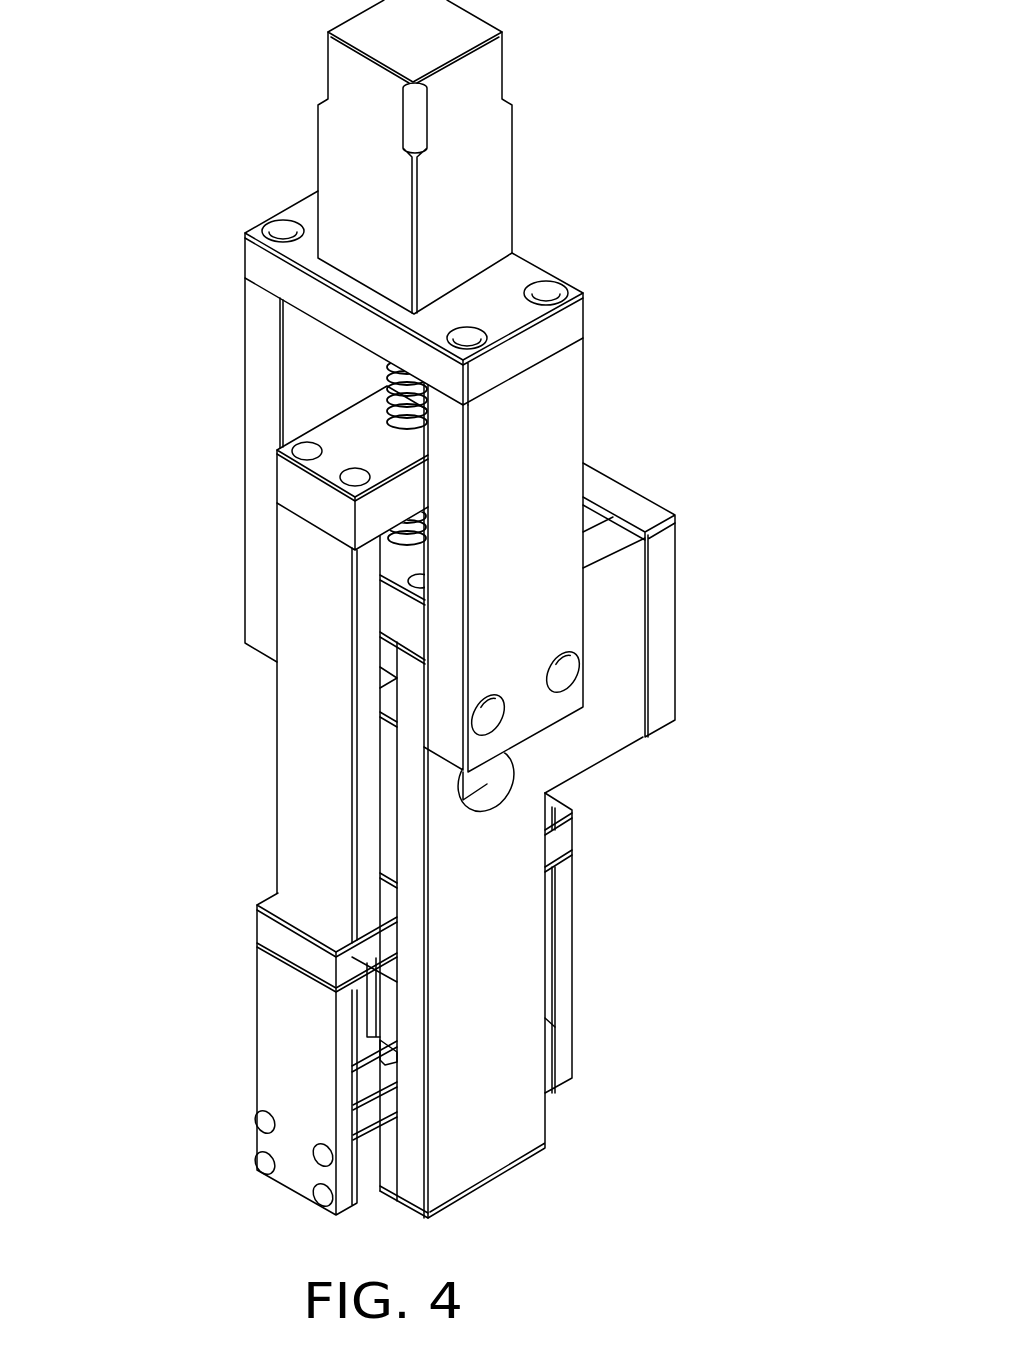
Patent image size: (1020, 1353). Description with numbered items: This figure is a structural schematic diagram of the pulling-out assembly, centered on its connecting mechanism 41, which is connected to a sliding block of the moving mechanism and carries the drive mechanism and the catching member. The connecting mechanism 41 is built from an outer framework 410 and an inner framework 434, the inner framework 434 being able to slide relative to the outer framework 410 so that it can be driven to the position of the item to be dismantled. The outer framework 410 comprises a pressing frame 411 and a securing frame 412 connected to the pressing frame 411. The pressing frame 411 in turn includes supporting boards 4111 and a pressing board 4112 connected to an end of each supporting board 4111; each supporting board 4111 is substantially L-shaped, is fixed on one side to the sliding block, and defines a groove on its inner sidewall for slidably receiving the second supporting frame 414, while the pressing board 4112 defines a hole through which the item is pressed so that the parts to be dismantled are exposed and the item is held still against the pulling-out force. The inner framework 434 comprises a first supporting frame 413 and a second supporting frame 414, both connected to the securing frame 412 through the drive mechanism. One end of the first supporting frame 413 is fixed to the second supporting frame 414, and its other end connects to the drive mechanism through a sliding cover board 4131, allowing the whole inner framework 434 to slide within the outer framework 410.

The connecting mechanism 41 is at (231, 171).
The outer framework 410 is at (700, 325).
The securing frame 412 is at (599, 367).
The pressing frame 411 is at (615, 466).
The supporting board 4111 is at (627, 615).
The pressing board 4112 is at (538, 1153).
The inner framework 434 is at (200, 818).
The sliding cover board 4131 is at (302, 492).
The first supporting frame 413 is at (297, 862).
The second supporting frame 414 is at (275, 998).